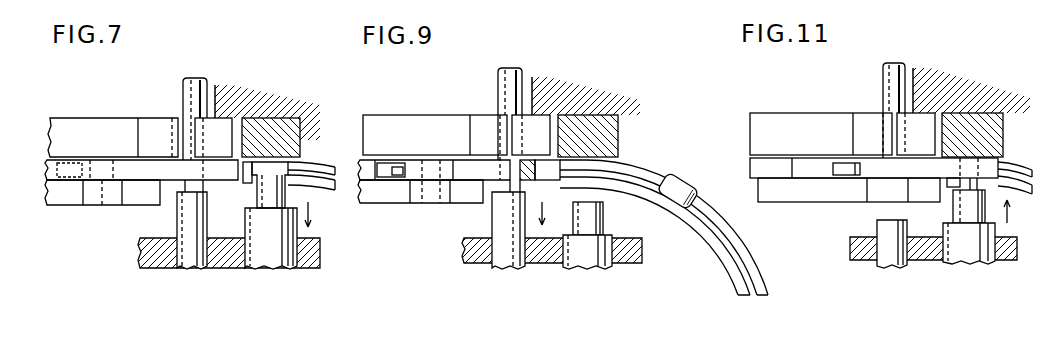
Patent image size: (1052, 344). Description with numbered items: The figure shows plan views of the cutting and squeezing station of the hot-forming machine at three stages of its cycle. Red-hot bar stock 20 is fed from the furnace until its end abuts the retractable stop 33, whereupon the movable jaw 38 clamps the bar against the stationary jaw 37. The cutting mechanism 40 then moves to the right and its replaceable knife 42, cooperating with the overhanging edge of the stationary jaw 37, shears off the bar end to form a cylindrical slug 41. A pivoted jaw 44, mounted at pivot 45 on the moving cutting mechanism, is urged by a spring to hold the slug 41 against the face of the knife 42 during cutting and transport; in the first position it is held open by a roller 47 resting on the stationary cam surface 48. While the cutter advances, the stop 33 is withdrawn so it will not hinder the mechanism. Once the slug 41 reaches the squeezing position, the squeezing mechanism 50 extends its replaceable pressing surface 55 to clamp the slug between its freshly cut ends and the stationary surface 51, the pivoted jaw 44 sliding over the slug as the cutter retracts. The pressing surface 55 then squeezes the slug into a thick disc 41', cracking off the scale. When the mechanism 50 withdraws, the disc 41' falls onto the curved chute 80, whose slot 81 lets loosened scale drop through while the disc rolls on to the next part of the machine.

In FIG. 7, the bar stock 20 is at (190, 78).
In FIG. 9, the bar stock 20 is at (498, 87).
In FIG. 11, the bar stock 20 is at (883, 82).
In FIG. 7, the retractable stop 33 is at (177, 226).
In FIG. 9, the retractable stop 33 is at (495, 226).
In FIG. 11, the retractable stop 33 is at (878, 227).
In FIG. 7, the stationary jaw 37 is at (218, 145).
In FIG. 9, the stationary jaw 37 is at (535, 145).
In FIG. 11, the stationary jaw 37 is at (920, 143).
In FIG. 7, the movable jaw 38 is at (157, 145).
In FIG. 9, the movable jaw 38 is at (485, 145).
In FIG. 11, the movable jaw 38 is at (870, 143).
In FIG. 7, the cutting mechanism 40 is at (77, 207).
In FIG. 9, the cutting mechanism 40 is at (414, 213).
In FIG. 11, the cutting mechanism 40 is at (840, 209).
In FIG. 11, the slug 41 is at (936, 199).
In FIG. 7, the disc 41' is at (314, 148).
In FIG. 9, the disc 41' is at (678, 178).
In FIG. 9, the knife 42 is at (434, 181).
In FIG. 7, the pivoted jaw 44 is at (218, 172).
In FIG. 9, the pivoted jaw 44 is at (539, 183).
In FIG. 11, the pivoted jaw 44 is at (874, 168).
In FIG. 7, the pivot 45 is at (102, 205).
In FIG. 9, the pivot 45 is at (432, 200).
In FIG. 9, the roller 47 is at (392, 178).
In FIG. 11, the roller 47 is at (833, 172).
In FIG. 7, the stationary cam surface 48 is at (78, 165).
In FIG. 9, the stationary cam surface 48 is at (360, 165).
In FIG. 11, the stationary cam surface 48 is at (750, 163).
In FIG. 7, the squeezing mechanism 50 is at (243, 227).
In FIG. 9, the squeezing mechanism 50 is at (579, 268).
In FIG. 11, the squeezing mechanism 50 is at (950, 265).
In FIG. 7, the stationary surface 51 is at (267, 157).
In FIG. 9, the stationary surface 51 is at (593, 157).
In FIG. 11, the stationary surface 51 is at (962, 157).
In FIG. 7, the pressing surface 55 is at (258, 183).
In FIG. 9, the pressing surface 55 is at (603, 208).
In FIG. 11, the pressing surface 55 is at (953, 203).
In FIG. 7, the chute 80 is at (322, 214).
In FIG. 9, the chute 80 is at (645, 160).
In FIG. 11, the chute 80 is at (1020, 212).
In FIG. 7, the slot 81 is at (326, 181).
In FIG. 9, the slot 81 is at (728, 238).
In FIG. 11, the slot 81 is at (1017, 163).